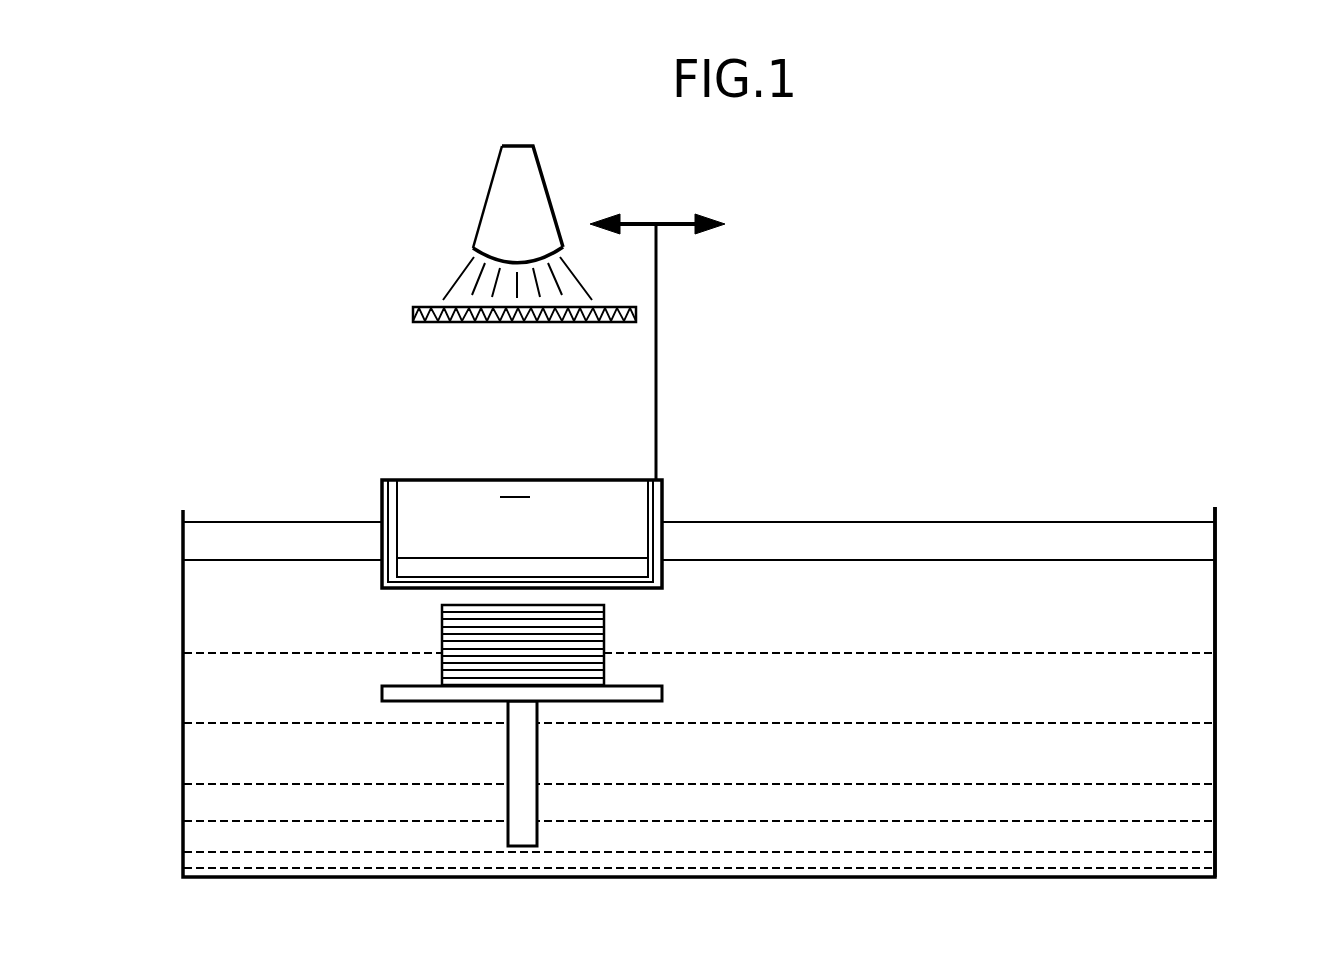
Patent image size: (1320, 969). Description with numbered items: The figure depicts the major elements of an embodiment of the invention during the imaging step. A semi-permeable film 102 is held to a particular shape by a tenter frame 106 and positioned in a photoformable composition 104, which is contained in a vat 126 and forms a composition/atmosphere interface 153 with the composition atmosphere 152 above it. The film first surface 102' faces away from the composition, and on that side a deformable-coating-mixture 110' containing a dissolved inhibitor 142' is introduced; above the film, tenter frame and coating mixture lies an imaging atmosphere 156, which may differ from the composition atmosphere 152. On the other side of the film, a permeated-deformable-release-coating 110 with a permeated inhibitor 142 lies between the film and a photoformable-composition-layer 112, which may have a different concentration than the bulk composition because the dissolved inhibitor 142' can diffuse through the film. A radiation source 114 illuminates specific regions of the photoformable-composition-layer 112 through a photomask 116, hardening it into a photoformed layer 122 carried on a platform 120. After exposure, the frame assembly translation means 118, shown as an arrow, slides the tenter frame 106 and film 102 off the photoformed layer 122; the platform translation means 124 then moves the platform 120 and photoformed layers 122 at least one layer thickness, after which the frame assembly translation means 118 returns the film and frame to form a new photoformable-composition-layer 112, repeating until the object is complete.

The semi-permeable film 102 is at (461, 524).
The film first surface 102' is at (386, 437).
The photoformable composition 104 is at (1030, 590).
The tenter frame 106 is at (390, 482).
The permeated-deformable-release-coating 110 is at (575, 511).
The deformable-coating-mixture 110' is at (602, 495).
The photoformable-composition-layer 112 is at (450, 603).
The radiation source 114 is at (515, 145).
The photomask 116 is at (421, 306).
The frame assembly translation means 118 is at (702, 220).
The platform 120 is at (663, 690).
The photoformed layer 122 is at (605, 633).
The platform translation means 124 is at (537, 748).
The vat 126 is at (1216, 572).
The permeated inhibitor 142 is at (565, 509).
The dissolved inhibitor 142' is at (462, 496).
The composition atmosphere 152 is at (897, 540).
The composition/atmosphere interface 153 is at (760, 560).
The imaging atmosphere 156 is at (515, 497).